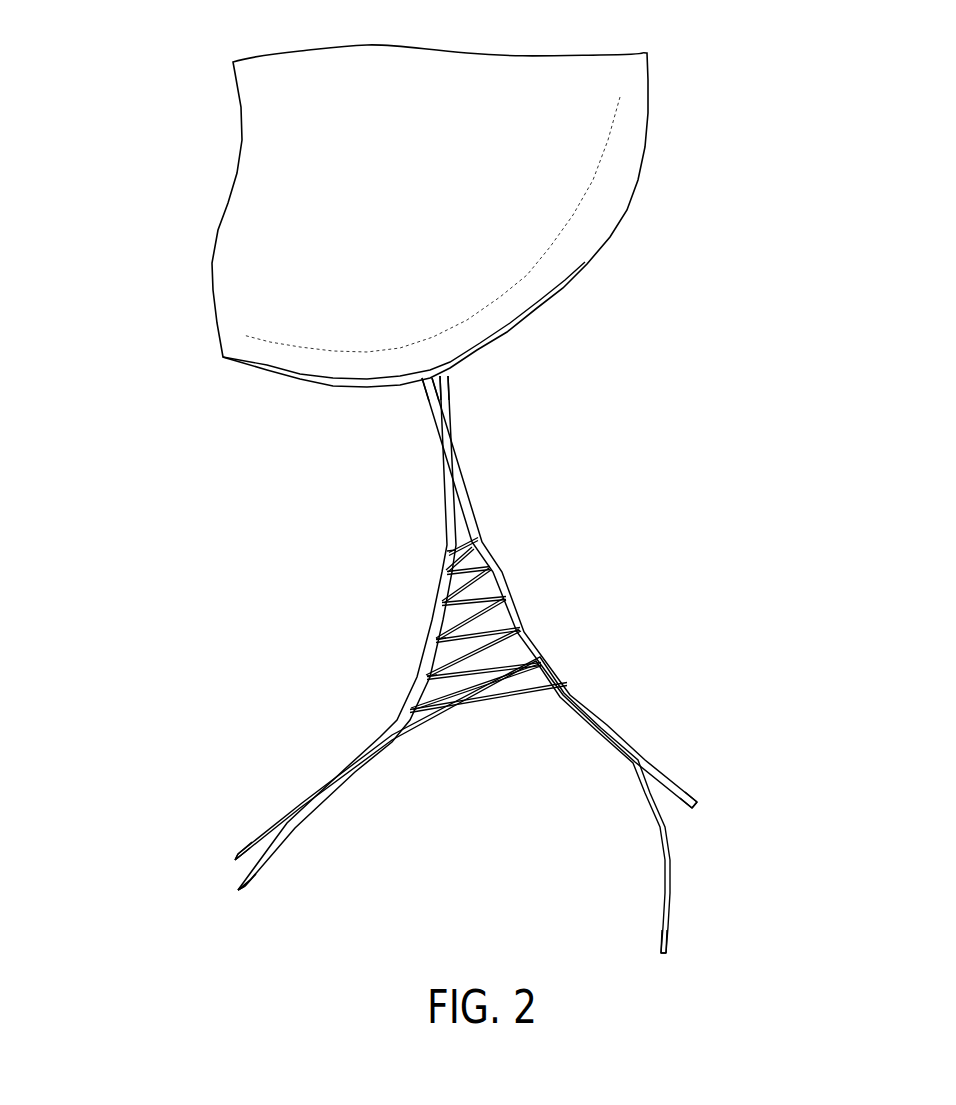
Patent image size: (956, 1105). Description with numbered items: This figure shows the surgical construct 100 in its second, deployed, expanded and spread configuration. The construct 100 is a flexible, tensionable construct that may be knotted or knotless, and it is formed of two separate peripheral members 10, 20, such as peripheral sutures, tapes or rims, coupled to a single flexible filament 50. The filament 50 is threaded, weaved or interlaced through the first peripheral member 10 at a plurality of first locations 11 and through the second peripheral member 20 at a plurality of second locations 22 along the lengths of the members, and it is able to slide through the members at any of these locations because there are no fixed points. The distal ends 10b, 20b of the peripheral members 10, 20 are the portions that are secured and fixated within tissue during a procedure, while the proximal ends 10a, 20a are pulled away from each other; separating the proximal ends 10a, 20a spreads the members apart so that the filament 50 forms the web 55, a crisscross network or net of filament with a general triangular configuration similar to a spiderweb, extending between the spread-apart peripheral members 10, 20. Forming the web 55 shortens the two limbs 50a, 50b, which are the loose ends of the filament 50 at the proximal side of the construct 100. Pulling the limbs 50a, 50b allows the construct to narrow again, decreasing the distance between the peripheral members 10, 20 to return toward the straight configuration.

The surgical construct 100 is at (678, 345).
The first peripheral member 10 is at (440, 597).
The proximal end of first peripheral member 10a is at (242, 873).
The distal end of first peripheral member 10b is at (450, 393).
The first locations 11 is at (450, 553).
The second peripheral member 20 is at (502, 582).
The proximal end of second peripheral member 20a is at (692, 793).
The distal end of second peripheral member 20b is at (430, 417).
The second locations 22 is at (477, 538).
The web 55 is at (467, 655).
The flexible filament 50 is at (652, 803).
The first limb 50a is at (265, 828).
The second limb 50b is at (670, 873).